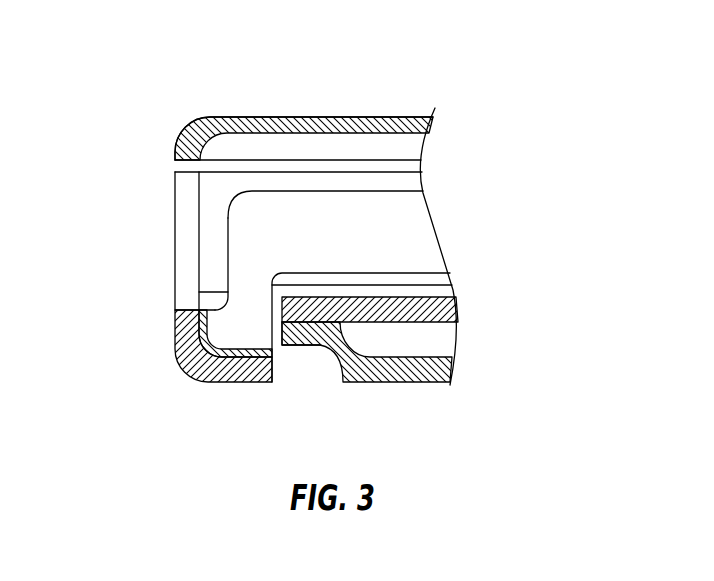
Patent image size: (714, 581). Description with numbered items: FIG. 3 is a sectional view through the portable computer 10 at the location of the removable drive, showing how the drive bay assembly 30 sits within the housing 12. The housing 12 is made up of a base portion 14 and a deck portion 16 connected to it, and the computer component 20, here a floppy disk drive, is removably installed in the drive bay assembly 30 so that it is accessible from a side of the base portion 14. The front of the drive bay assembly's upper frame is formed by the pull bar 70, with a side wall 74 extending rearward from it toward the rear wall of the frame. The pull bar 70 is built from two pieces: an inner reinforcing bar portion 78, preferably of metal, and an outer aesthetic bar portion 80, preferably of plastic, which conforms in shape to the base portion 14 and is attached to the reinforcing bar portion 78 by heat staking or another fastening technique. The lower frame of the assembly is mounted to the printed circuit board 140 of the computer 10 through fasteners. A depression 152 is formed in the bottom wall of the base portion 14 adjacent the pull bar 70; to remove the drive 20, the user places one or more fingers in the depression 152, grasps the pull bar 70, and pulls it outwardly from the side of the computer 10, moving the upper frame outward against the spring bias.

The portable computer 10 is at (395, 72).
The housing 12 is at (172, 120).
The deck portion 16 is at (328, 116).
The computer component 20 is at (175, 188).
The drive bay assembly 30 is at (165, 225).
The side wall 74 is at (415, 240).
The reinforcing bar portion 78 is at (229, 340).
The aesthetic bar portion 80 is at (175, 316).
The pull bar 70 is at (188, 375).
The printed circuit board 140 is at (457, 310).
The base portion 14 is at (390, 384).
The depression 152 is at (300, 375).